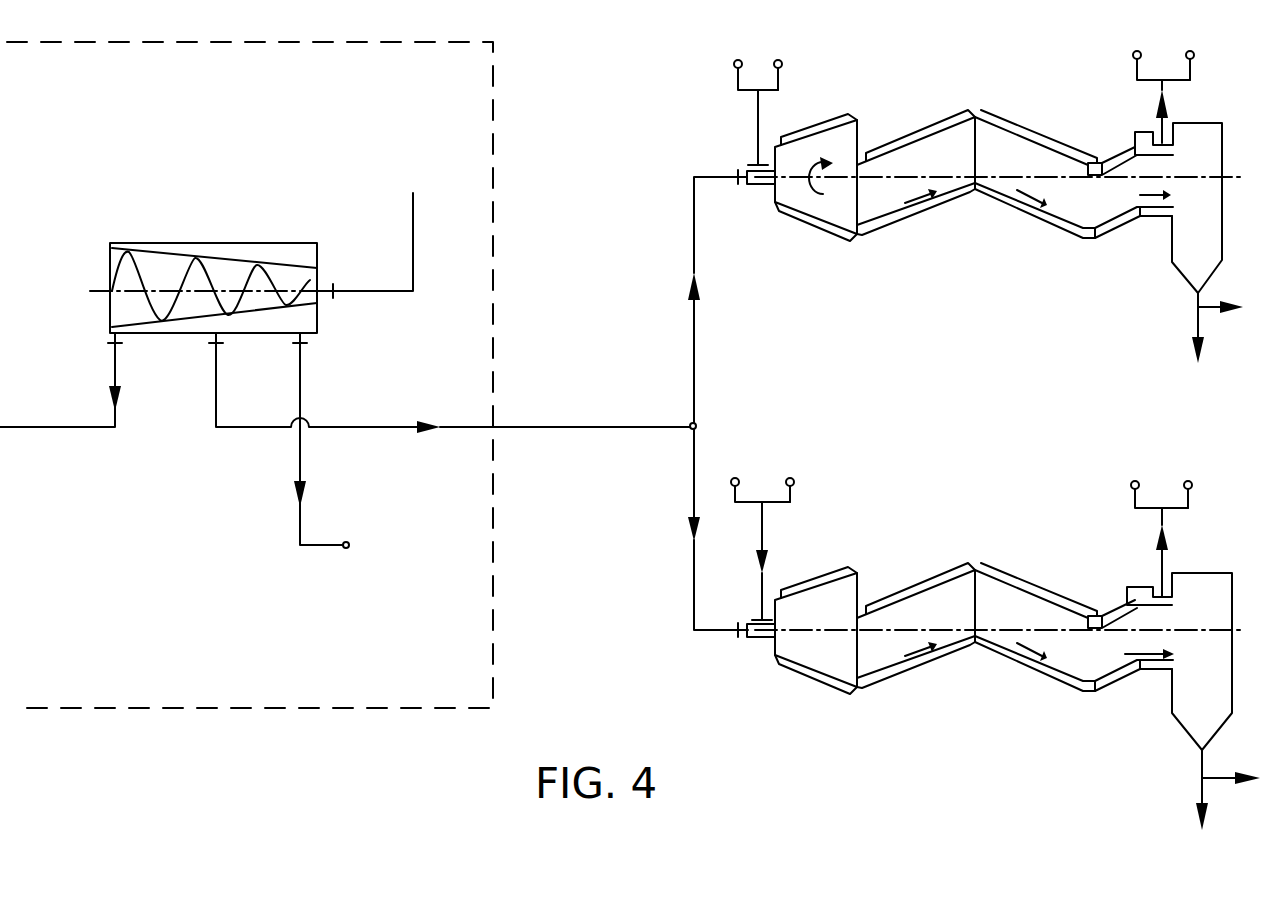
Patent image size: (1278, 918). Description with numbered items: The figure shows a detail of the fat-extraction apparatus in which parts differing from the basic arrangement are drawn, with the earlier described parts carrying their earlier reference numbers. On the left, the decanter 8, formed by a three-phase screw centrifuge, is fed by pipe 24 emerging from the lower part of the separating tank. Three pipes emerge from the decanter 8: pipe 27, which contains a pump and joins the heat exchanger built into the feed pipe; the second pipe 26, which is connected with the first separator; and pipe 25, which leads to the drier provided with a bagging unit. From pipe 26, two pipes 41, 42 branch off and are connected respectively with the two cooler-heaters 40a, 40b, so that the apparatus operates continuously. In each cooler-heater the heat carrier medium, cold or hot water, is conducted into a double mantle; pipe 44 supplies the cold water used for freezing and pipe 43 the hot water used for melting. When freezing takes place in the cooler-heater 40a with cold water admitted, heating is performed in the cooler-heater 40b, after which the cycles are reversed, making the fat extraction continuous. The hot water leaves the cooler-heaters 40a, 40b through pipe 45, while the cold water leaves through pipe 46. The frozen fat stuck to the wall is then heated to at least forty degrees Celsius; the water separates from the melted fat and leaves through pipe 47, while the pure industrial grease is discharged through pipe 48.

The decanter 8 is at (220, 233).
The pipe 24 is at (368, 291).
The pipe 25 is at (115, 378).
The second pipe 26 is at (214, 410).
The pipe 27 is at (306, 380).
The cooler-heater 40a is at (908, 98).
The cooler-heater 40b is at (795, 698).
The pipe 41 is at (694, 252).
The pipe 42 is at (694, 592).
The pipe 43 is at (738, 80).
The pipe 44 is at (778, 78).
The pipe 45 is at (1137, 78).
The pipe 46 is at (1190, 76).
The pipe 47 is at (1198, 330).
The pipe 48 is at (1217, 303).